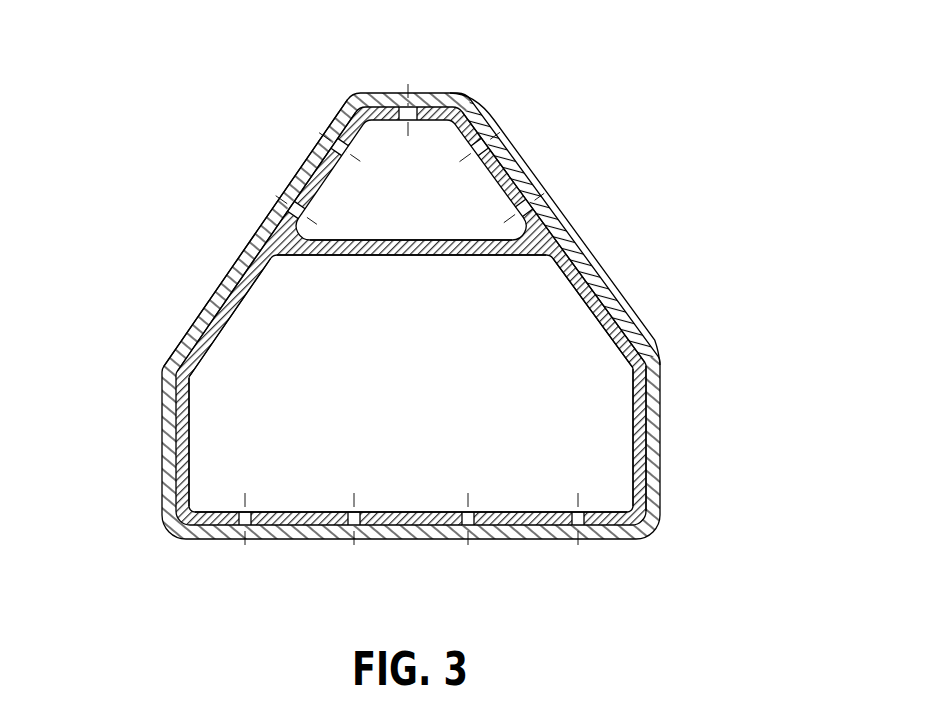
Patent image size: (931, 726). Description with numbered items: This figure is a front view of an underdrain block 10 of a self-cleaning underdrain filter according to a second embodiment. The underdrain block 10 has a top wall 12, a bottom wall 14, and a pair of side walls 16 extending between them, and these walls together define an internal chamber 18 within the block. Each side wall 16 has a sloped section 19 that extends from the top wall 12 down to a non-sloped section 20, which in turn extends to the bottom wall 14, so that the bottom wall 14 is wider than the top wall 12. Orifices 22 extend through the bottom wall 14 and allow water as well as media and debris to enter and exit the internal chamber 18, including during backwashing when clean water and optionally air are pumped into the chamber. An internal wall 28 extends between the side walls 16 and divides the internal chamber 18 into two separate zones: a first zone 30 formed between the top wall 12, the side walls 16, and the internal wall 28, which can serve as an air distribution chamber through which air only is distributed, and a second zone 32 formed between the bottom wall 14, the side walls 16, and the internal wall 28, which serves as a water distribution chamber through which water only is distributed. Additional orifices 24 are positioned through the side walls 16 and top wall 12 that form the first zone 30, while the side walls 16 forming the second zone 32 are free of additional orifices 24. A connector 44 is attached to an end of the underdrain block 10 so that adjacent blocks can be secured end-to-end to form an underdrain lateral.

The underdrain block 10 is at (434, 325).
The top wall 12 is at (440, 124).
The bottom wall 14 is at (312, 508).
The side walls 16 is at (215, 350).
The internal chamber 18 is at (411, 383).
The sloped section 19 is at (259, 276).
The non-sloped section 20 is at (192, 414).
The orifices 22 is at (240, 537).
The additional orifices 24 is at (318, 140).
The internal wall 28 is at (354, 240).
The first zone 30 is at (480, 201).
The second zone 32 is at (584, 430).
The connector 44 is at (222, 288).